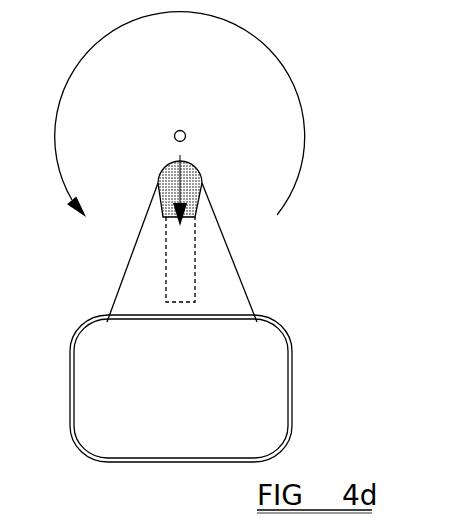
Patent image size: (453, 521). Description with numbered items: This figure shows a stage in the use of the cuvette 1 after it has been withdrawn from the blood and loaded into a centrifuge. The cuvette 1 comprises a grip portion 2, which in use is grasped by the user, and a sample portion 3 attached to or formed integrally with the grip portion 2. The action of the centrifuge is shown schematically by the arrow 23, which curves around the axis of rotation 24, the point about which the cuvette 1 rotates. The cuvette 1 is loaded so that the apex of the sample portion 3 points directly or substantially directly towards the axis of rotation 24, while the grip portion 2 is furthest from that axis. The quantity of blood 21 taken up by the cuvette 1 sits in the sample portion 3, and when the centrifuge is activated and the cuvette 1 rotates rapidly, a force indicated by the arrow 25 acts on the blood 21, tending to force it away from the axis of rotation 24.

The cuvette 1 is at (66, 442).
The grip portion 2 is at (181, 388).
The sample portion 3 is at (238, 272).
The blood 21 is at (200, 178).
The arrow 23 is at (280, 63).
The axis of rotation 24 is at (180, 130).
The arrow 25 is at (158, 183).